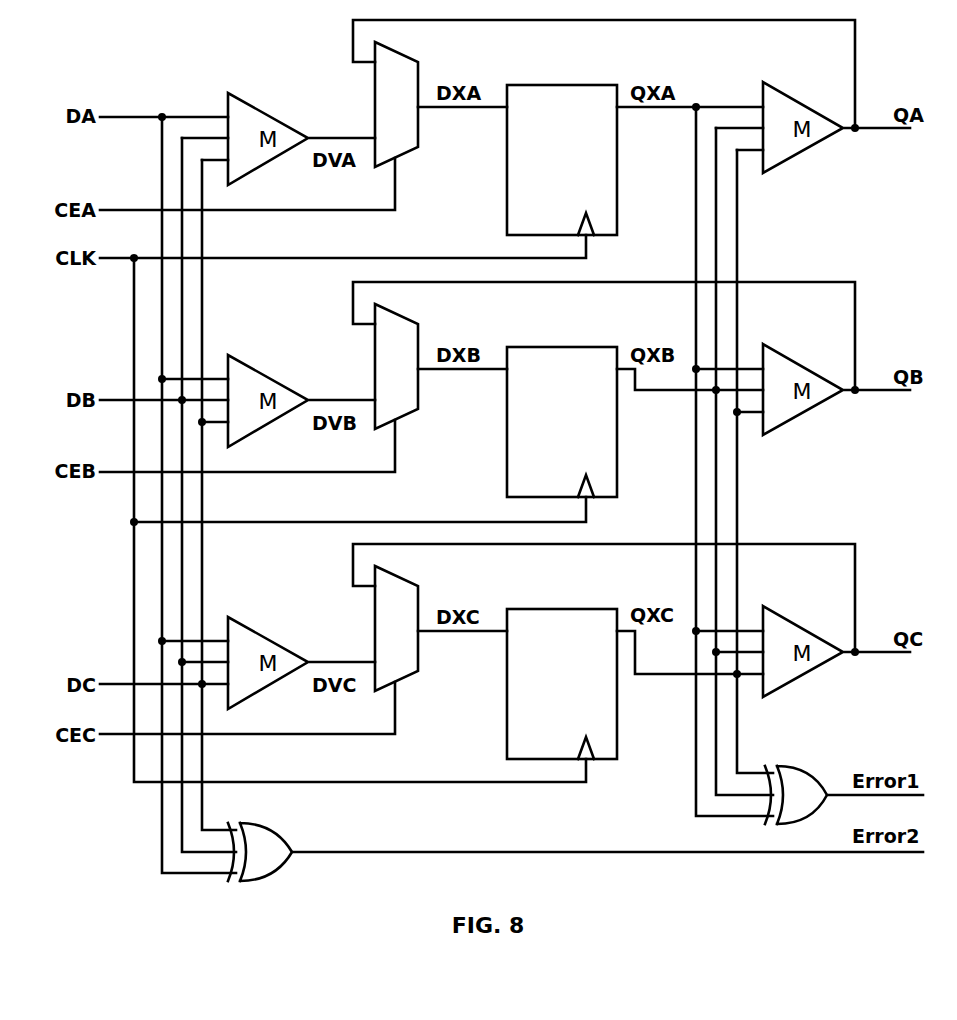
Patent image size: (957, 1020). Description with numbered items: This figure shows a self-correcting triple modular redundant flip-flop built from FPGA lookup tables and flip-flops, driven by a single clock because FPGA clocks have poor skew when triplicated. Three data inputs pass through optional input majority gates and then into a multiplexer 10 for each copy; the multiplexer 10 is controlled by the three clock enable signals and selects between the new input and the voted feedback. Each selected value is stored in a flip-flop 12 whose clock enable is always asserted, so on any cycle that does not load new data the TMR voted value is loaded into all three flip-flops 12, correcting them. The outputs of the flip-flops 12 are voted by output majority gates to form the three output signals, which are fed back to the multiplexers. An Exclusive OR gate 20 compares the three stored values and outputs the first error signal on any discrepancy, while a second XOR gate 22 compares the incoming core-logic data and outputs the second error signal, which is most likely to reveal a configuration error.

The multiplexer 10 is at (396, 366).
The flip-flop 12 is at (562, 422).
The Exclusive OR gate 20 is at (796, 795).
The XOR gate 22 is at (260, 852).